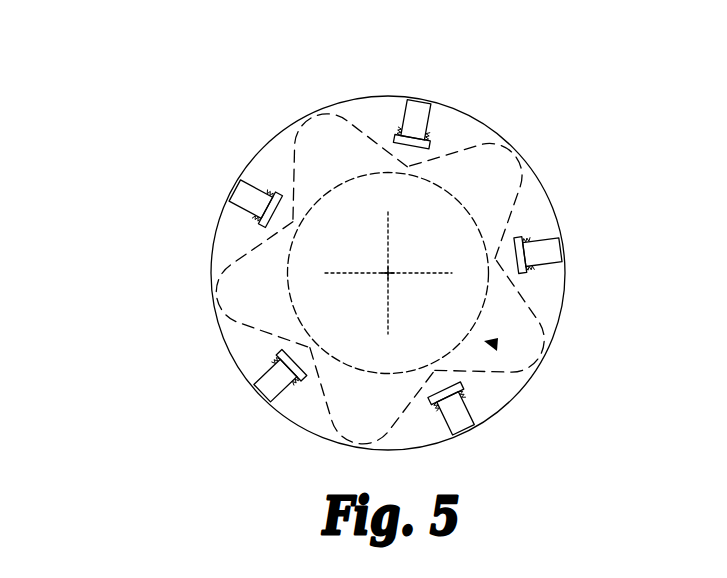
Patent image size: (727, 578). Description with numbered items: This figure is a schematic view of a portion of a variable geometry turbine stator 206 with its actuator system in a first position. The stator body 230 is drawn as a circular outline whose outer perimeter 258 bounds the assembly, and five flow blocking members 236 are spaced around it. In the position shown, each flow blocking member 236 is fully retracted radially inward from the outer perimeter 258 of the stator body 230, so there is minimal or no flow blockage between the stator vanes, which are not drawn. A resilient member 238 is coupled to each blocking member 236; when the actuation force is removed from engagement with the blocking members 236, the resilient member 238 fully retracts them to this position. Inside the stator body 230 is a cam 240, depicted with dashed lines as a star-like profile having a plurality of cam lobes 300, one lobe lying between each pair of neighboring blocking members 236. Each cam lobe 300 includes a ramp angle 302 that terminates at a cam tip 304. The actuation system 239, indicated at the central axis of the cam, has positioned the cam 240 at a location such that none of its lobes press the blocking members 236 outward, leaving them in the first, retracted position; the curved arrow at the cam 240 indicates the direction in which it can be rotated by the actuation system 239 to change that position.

The turbine stator 206 is at (118, 167).
The stator body 230 is at (250, 353).
The flow blocking members 236 is at (420, 108).
The resilient member 238 is at (433, 133).
The actuation system 239 is at (389, 272).
The cam 240 is at (492, 345).
The outer perimeter 258 is at (500, 414).
The cam lobes 300 is at (319, 148).
The ramp angle 302 is at (507, 230).
The cam tip 304 is at (516, 155).